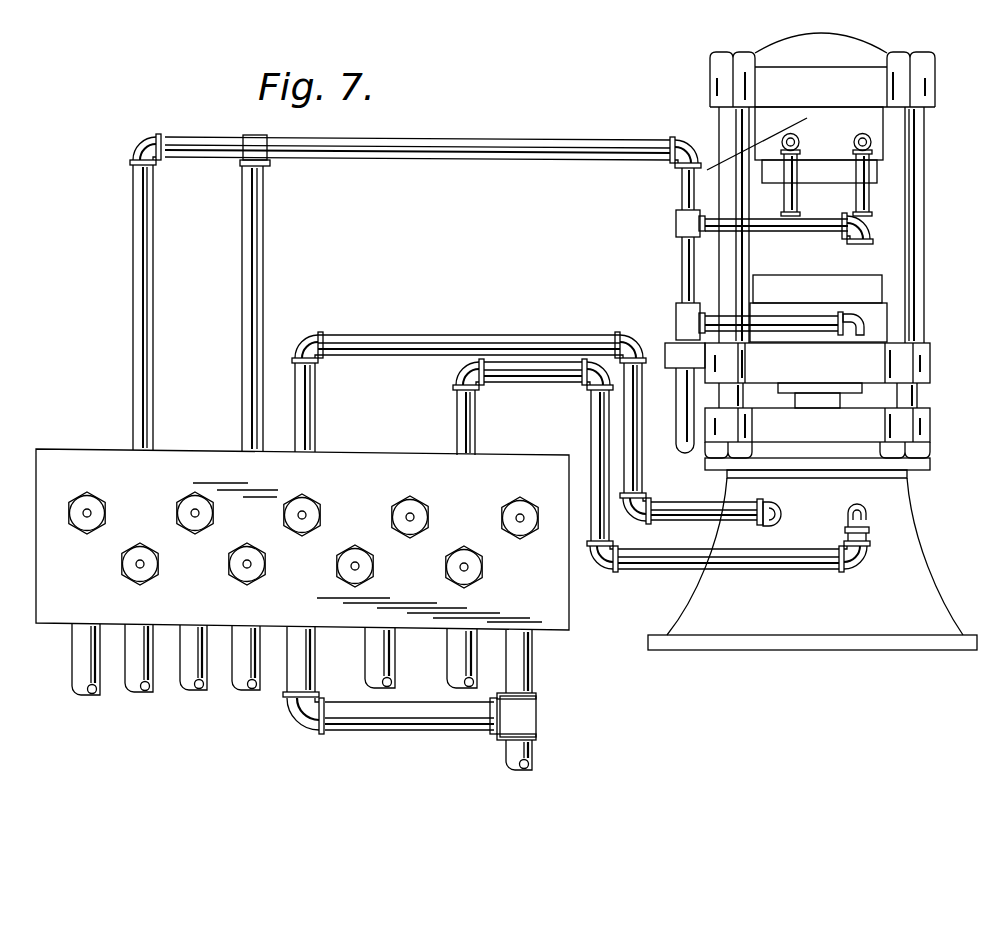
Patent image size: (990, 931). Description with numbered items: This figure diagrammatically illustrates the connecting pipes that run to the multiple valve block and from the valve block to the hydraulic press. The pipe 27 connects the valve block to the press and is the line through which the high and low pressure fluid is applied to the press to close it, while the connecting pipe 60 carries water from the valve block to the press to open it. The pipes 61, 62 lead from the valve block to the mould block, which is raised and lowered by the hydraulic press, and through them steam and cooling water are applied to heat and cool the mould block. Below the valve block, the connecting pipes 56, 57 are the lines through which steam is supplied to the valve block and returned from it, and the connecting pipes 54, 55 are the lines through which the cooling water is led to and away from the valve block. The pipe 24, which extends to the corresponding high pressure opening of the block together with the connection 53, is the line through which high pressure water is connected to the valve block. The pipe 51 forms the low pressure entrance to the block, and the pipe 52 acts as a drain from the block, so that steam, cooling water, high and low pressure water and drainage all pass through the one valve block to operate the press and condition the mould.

The high pressure water pipe 24 is at (528, 681).
The press closing pipe 27 is at (685, 570).
The low pressure entrance pipe 51 is at (454, 658).
The drain pipe 52 is at (370, 670).
The high pressure water opening pipe 53 is at (312, 675).
The cooling water pipe 54 is at (249, 690).
The cooling water pipe 55 is at (191, 690).
The steam pipe 56 is at (136, 690).
The steam pipe 57 is at (72, 683).
The press opening pipe 60 is at (380, 352).
The mould block steam and cooling water pipe 61 is at (240, 398).
The mould block steam and cooling water pipe 62 is at (156, 292).